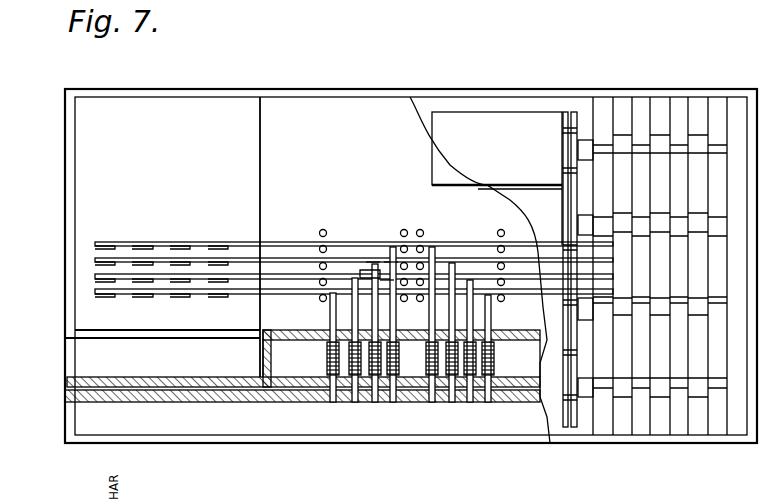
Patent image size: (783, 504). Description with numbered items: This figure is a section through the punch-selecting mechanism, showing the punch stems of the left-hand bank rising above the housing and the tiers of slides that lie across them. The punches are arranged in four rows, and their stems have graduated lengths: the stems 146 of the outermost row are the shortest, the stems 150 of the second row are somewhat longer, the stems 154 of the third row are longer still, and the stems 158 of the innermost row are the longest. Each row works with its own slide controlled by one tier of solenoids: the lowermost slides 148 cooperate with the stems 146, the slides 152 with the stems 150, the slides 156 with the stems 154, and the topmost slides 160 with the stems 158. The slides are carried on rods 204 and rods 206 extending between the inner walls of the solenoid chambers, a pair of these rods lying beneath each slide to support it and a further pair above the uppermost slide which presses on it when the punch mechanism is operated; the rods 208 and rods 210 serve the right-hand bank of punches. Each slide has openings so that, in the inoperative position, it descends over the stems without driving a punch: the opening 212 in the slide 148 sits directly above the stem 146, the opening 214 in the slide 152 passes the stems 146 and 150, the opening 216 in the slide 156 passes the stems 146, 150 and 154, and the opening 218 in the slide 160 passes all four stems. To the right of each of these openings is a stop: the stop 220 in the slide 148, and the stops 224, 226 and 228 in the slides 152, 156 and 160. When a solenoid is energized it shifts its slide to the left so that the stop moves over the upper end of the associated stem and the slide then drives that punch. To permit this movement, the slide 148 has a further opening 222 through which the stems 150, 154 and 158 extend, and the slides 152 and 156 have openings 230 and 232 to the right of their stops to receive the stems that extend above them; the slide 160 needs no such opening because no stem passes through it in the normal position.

The stems 146 is at (336, 346).
The slides 148 is at (203, 297).
The stems 150 is at (395, 358).
The slides 152 is at (250, 273).
The stems 154 is at (373, 270).
The slides 156 is at (202, 257).
The stems 158 is at (391, 272).
The slides 160 is at (127, 240).
The rods 204 is at (319, 231).
The rods 206 is at (421, 229).
The rods 208 is at (423, 232).
The rods 210 is at (503, 231).
The opening 212 is at (350, 300).
The opening 214 is at (329, 280).
The opening 216 is at (365, 280).
The opening 218 is at (468, 240).
The stop 220 is at (492, 309).
The opening 222 is at (433, 298).
The stop 224 is at (362, 274).
The stop 226 is at (444, 262).
The stop 228 is at (404, 244).
The opening 230 is at (386, 279).
The opening 232 is at (385, 277).